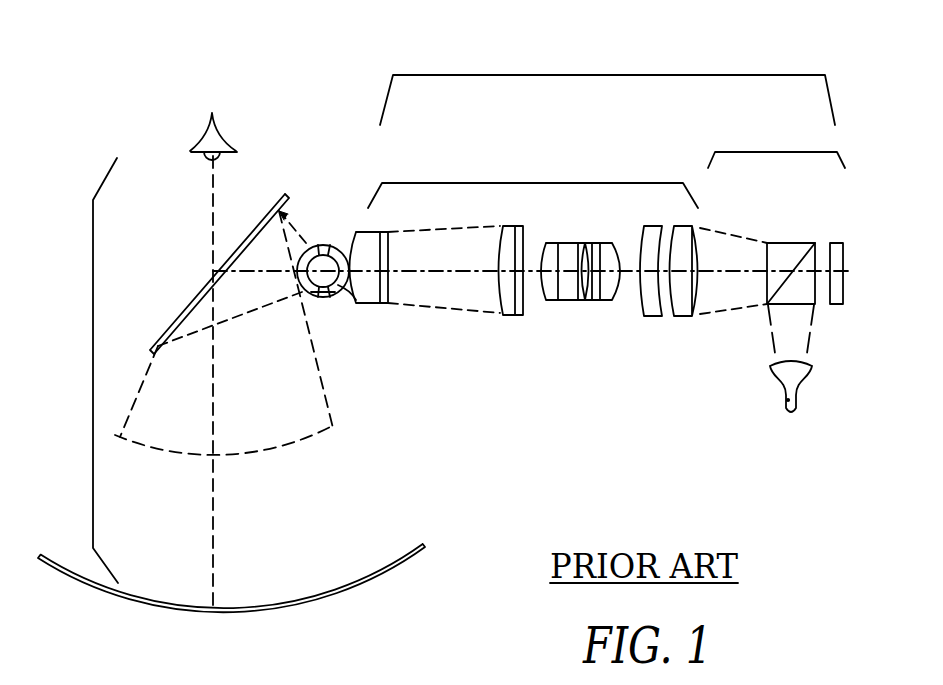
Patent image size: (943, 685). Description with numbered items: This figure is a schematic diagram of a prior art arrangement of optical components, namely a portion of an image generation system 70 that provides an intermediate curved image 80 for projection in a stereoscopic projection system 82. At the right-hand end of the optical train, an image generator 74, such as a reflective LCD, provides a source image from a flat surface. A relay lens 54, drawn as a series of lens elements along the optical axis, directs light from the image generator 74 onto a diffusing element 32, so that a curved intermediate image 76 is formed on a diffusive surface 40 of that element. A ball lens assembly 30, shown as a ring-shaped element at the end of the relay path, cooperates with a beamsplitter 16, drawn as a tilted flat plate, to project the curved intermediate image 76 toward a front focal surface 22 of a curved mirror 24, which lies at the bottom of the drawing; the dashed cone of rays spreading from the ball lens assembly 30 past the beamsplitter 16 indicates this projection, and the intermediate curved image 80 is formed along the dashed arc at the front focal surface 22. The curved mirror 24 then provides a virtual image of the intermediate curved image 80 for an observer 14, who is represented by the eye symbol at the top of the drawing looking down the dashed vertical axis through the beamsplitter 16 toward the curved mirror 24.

The observer 14 is at (196, 155).
The beamsplitter 16 is at (214, 273).
The front focal surface 22 is at (328, 405).
The curved mirror 24 is at (404, 560).
The ball lens assembly 30 is at (297, 258).
The diffusing element 32 is at (395, 304).
The diffusive surface 40 is at (339, 298).
The relay lens 54 is at (530, 183).
The image generation system 70 is at (607, 75).
The image generator 74 is at (775, 152).
The curved intermediate image 76 is at (323, 297).
The intermediate curved image 80 is at (236, 456).
The stereoscopic projection system 82 is at (93, 370).